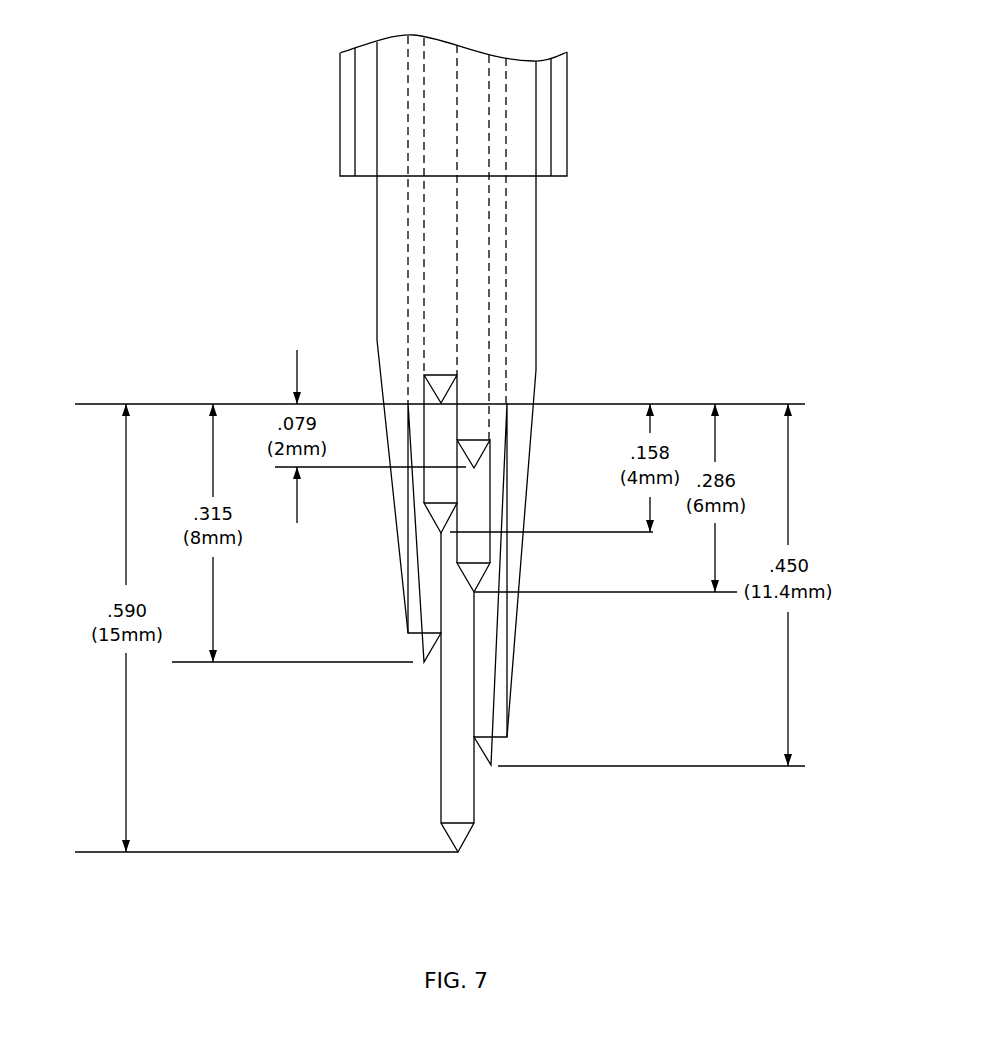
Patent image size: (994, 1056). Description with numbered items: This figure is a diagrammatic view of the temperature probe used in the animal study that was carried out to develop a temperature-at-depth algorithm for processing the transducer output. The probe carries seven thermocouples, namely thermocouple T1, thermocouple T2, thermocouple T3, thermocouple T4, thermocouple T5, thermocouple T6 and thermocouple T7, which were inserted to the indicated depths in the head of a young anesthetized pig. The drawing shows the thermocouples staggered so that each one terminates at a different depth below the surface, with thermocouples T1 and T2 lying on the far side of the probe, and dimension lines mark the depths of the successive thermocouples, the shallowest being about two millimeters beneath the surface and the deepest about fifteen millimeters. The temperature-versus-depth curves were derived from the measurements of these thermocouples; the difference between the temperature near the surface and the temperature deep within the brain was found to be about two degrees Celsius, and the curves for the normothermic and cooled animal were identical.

The thermocouple T1 is at (440, 402).
The thermocouple T2 is at (474, 468).
The thermocouple T3 is at (441, 532).
The thermocouple T4 is at (475, 593).
The thermocouple T5 is at (424, 662).
The thermocouple T6 is at (491, 765).
The thermocouple T7 is at (458, 852).